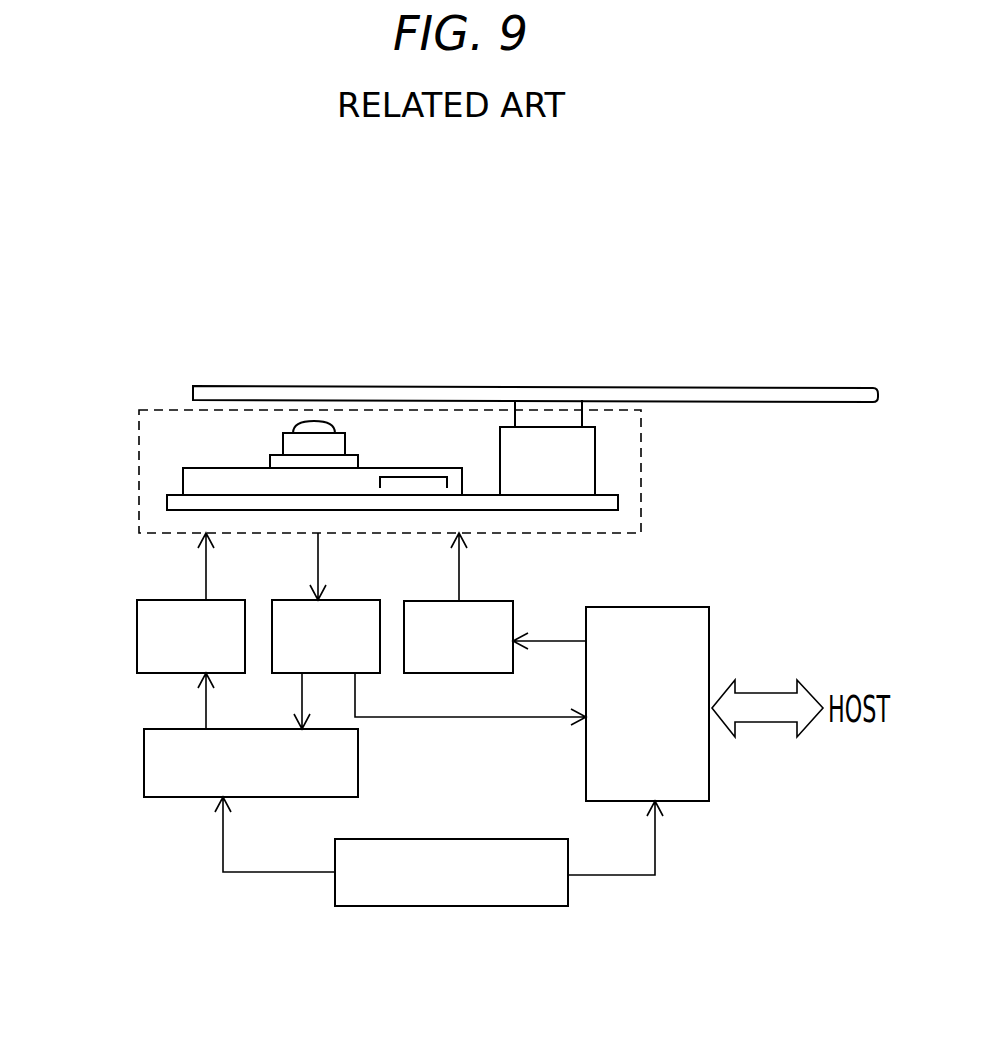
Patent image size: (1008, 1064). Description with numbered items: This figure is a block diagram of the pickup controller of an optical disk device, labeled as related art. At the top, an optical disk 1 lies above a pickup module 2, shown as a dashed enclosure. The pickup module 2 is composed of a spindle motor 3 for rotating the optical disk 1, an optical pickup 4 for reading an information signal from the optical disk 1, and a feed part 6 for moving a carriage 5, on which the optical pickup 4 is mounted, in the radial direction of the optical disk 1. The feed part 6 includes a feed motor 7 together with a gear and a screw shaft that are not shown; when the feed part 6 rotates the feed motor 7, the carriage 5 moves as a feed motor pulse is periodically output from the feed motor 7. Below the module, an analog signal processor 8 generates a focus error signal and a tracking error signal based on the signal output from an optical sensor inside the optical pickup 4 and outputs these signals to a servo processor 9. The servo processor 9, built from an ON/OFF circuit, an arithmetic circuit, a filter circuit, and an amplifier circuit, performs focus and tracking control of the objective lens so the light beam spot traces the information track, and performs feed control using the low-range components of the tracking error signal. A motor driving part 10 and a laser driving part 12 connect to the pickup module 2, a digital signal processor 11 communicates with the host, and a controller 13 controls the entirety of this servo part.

The optical disk 1 is at (487, 386).
The pickup module 2 is at (165, 420).
The spindle motor 3 is at (592, 455).
The optical pickup 4 is at (315, 423).
The carriage 5 is at (283, 457).
The feed part 6 is at (193, 485).
The feed motor 7 is at (400, 485).
The analog signal processor 8 is at (355, 598).
The servo processor 9 is at (143, 762).
The motor driving part 10 is at (152, 598).
The digital signal processor 11 is at (682, 607).
The laser driving part 12 is at (508, 600).
The controller 13 is at (440, 838).